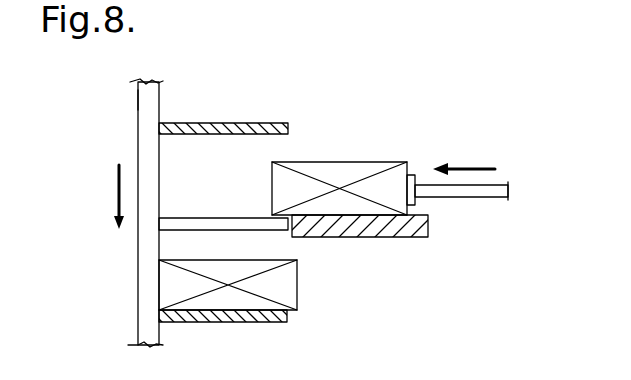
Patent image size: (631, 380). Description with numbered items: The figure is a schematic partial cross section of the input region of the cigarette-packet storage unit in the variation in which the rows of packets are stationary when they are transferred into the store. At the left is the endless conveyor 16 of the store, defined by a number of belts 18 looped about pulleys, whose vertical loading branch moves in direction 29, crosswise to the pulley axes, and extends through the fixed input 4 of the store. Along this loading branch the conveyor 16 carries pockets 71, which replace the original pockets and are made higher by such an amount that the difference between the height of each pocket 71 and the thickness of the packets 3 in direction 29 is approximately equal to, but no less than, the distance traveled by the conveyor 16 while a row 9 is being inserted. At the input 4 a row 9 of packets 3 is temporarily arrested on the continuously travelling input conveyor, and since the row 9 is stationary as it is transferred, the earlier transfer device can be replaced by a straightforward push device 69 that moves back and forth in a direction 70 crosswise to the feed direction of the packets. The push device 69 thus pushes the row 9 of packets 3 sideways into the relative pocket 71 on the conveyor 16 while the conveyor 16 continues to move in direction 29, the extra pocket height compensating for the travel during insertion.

The packets 3 is at (333, 173).
The fixed input 4 is at (303, 150).
The rows 9 is at (393, 158).
The endless conveyor 16 is at (168, 91).
The belts 18 is at (138, 100).
The direction 29 is at (118, 193).
The push device 69 is at (465, 196).
The direction 70 is at (460, 167).
The pockets 71 is at (197, 137).